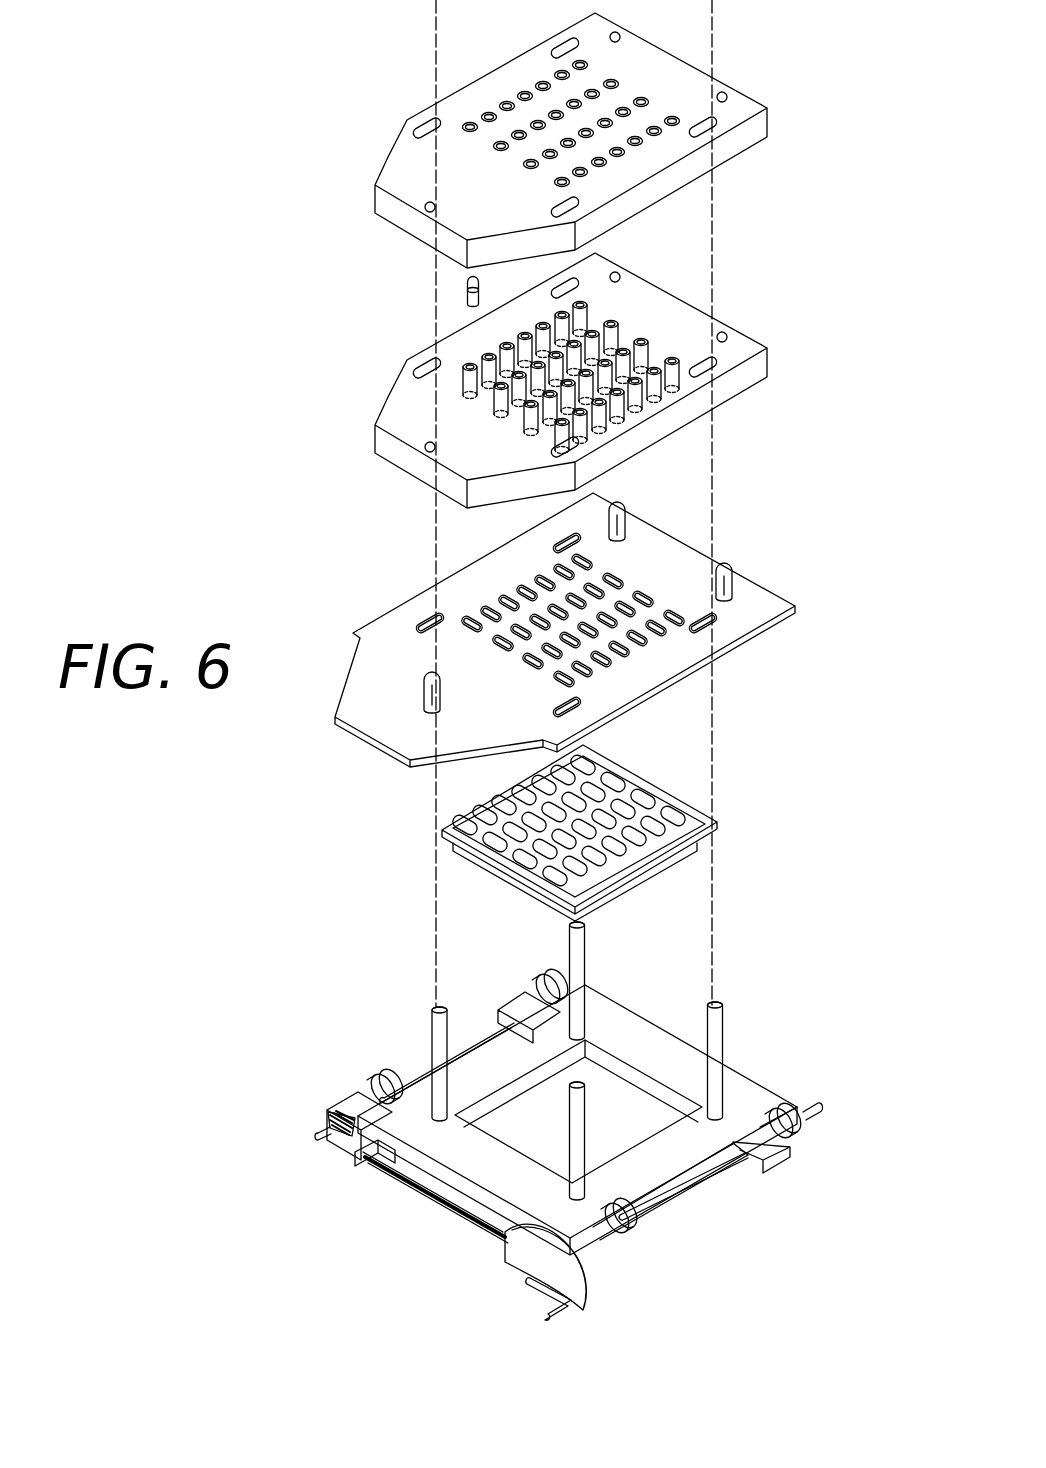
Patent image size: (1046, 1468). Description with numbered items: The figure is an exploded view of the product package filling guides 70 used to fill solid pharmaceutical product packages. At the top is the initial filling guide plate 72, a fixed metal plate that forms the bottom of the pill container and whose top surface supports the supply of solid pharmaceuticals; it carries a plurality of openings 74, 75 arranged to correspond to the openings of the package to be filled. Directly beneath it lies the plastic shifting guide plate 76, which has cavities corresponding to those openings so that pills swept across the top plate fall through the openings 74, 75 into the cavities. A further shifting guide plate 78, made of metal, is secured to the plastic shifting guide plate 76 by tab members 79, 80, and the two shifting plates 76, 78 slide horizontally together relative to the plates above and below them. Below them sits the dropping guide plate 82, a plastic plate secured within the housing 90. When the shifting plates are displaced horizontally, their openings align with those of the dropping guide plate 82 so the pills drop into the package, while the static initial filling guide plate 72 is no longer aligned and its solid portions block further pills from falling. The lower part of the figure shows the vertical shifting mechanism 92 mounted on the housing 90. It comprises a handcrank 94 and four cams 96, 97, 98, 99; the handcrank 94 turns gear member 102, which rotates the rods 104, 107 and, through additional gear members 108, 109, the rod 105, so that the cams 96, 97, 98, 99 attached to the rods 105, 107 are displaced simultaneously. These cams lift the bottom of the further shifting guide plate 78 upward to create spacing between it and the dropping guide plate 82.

The product package filling guides 70 is at (900, 371).
The initial filling guide plate 72 is at (662, 70).
The opening 74 is at (470, 126).
The opening 75 is at (488, 117).
The shifting guide plate 76 is at (665, 305).
The further shifting guide plate 78 is at (682, 552).
The tab member 79 is at (626, 522).
The tab member 80 is at (734, 590).
The dropping guide plate 82 is at (640, 785).
The housing 90 is at (659, 1038).
The vertical shifting mechanism 92 is at (438, 1203).
The handcrank 94 is at (530, 1290).
The cam 96 is at (372, 1073).
The cam 97 is at (548, 968).
The cam 98 is at (800, 1105).
The cam 99 is at (643, 1230).
The gear member 102 is at (586, 1282).
The rod 104 is at (367, 1168).
The rod 105 is at (410, 1073).
The rod 107 is at (714, 1180).
The gear member 108 is at (337, 1100).
The gear member 109 is at (320, 1140).